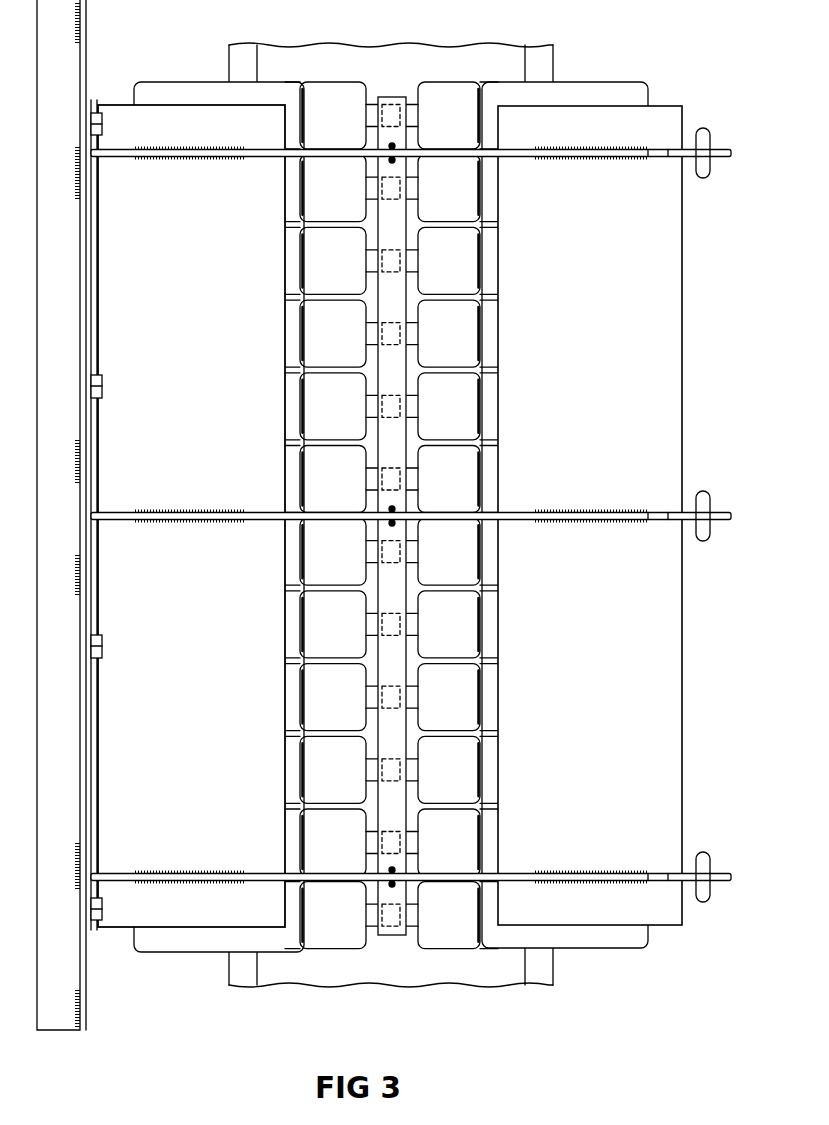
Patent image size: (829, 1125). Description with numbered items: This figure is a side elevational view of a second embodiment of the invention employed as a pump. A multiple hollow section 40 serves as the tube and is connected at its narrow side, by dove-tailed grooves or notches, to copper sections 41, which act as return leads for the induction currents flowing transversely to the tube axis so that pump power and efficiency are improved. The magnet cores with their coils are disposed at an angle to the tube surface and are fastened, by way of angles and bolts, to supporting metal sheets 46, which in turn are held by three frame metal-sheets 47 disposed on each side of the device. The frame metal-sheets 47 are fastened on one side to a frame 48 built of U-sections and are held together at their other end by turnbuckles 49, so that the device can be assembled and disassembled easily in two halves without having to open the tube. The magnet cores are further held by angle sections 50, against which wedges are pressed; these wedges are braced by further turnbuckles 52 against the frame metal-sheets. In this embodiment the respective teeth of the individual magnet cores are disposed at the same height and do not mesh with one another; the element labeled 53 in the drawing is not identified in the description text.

The multiple hollow section 40 is at (415, 973).
The copper sections 41 is at (537, 975).
The supporting metal sheet 46 is at (658, 644).
The frame metal-sheets 47 is at (607, 877).
The frame 48 is at (57, 1033).
The turnbuckles 49 is at (704, 538).
The angle sections 50 is at (393, 99).
The turnbuckles 52 is at (390, 146).
The cell module 53 is at (330, 937).